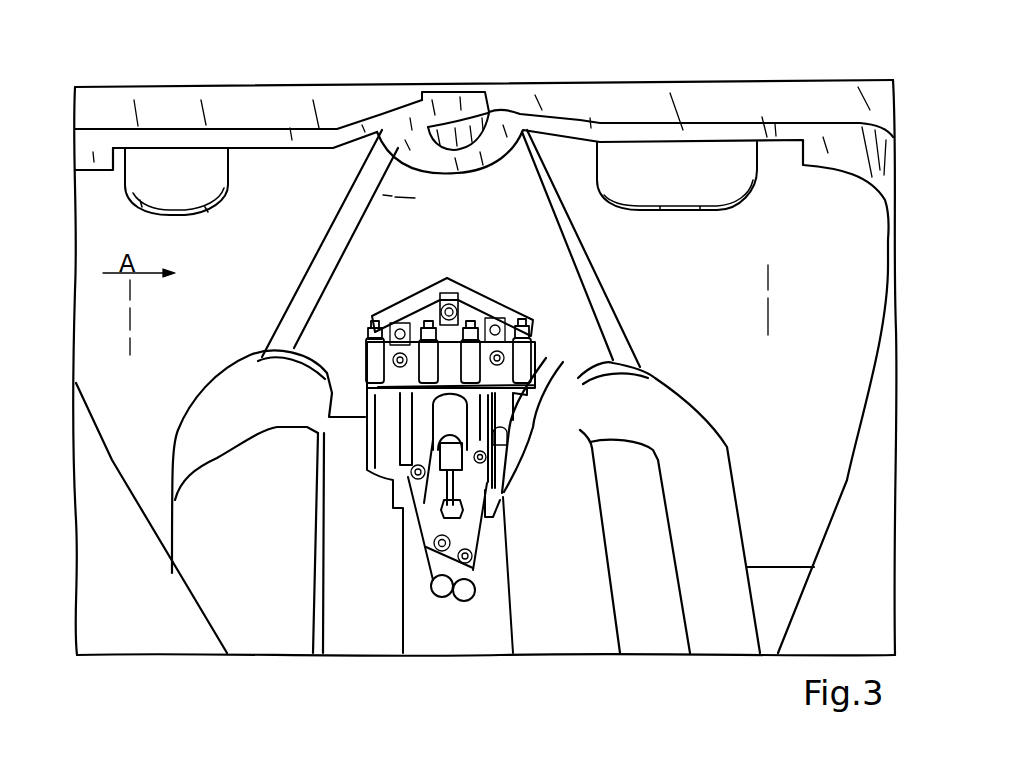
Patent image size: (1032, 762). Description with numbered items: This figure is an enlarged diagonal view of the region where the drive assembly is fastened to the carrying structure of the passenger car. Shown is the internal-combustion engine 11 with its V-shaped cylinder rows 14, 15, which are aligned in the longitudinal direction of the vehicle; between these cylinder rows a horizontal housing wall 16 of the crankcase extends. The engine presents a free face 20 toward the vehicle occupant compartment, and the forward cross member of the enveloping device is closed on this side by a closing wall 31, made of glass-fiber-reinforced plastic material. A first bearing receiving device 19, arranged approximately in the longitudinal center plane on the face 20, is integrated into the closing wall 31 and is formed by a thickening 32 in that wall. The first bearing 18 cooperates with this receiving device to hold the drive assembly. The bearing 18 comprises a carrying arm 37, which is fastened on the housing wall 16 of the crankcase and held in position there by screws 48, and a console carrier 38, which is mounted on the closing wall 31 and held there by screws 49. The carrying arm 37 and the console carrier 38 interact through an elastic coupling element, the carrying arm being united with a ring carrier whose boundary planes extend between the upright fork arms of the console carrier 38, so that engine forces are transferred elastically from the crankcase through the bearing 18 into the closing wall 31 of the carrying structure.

The internal-combustion engine 11 is at (625, 360).
The cylinder row 14 is at (266, 357).
The cylinder row 15 is at (645, 405).
The horizontal housing wall 16 is at (493, 500).
The first bearing 18 is at (473, 322).
The first bearing receiving device 19 is at (406, 293).
The free face 20 is at (290, 346).
The closing wall 31 is at (103, 207).
The thickening 32 is at (392, 196).
The carrying arm 37 is at (465, 532).
The console carrier 38 is at (428, 303).
The screws 48 is at (440, 545).
The screws 49 is at (500, 351).